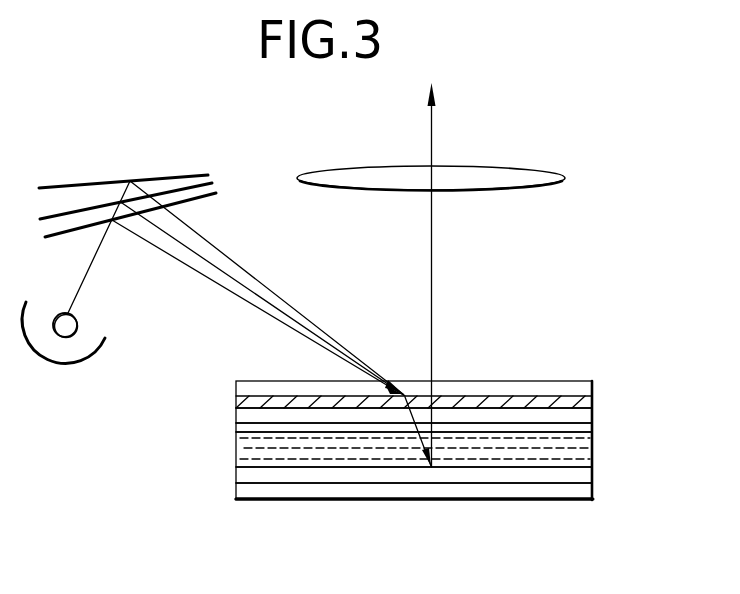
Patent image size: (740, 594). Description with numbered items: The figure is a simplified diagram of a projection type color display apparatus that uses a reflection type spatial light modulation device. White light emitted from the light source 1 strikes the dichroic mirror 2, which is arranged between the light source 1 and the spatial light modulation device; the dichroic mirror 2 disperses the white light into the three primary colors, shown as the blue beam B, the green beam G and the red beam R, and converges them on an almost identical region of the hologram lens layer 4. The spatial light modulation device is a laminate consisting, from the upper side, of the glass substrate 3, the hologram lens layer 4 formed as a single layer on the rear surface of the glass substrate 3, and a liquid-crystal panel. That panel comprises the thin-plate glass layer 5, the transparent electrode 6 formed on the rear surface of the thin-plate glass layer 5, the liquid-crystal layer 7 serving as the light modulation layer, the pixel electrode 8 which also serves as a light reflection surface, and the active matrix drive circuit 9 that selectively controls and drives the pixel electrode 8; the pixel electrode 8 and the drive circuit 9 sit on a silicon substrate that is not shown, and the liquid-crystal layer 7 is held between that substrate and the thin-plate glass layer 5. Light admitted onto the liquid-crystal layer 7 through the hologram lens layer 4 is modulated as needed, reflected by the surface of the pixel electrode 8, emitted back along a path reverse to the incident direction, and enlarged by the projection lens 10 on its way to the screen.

The light source 1 is at (72, 362).
The dichroic mirror 2 is at (75, 185).
The glass substrate 3 is at (441, 440).
The hologram lens layer 4 is at (592, 400).
The thin-plate glass layer 5 is at (587, 418).
The transparent electrode 6 is at (592, 430).
The liquid-crystal layer 7 is at (592, 450).
The pixel electrode 8 is at (587, 472).
The active matrix drive circuit 9 is at (555, 492).
The projection lens 10 is at (543, 168).
The blue primary color light B is at (208, 240).
The green primary color light G is at (235, 278).
The red primary color light R is at (198, 275).